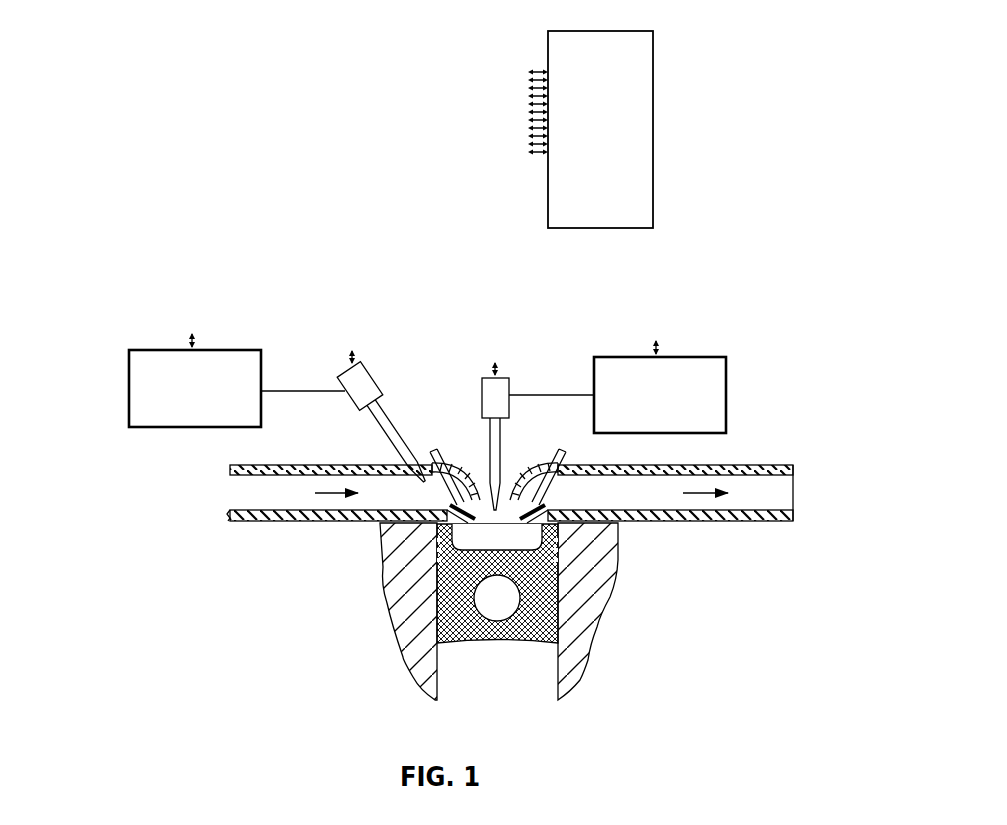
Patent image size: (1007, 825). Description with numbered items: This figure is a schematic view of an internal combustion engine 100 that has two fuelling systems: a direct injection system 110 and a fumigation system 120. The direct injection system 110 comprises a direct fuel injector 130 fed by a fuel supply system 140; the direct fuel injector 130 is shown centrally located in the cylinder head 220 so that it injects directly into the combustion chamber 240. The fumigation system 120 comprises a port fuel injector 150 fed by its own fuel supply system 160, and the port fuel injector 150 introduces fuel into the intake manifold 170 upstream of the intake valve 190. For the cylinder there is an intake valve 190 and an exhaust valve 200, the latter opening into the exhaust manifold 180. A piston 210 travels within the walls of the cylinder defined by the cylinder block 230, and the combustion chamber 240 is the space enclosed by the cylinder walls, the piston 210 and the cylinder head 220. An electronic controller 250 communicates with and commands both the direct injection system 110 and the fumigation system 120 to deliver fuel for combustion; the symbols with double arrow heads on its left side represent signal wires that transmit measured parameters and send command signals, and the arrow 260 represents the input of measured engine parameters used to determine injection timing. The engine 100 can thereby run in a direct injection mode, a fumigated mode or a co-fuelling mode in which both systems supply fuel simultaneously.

The internal combustion engine 100 is at (232, 158).
The direct injection system 110 is at (745, 298).
The fumigation system 120 is at (240, 270).
The direct fuel injector 130 is at (482, 391).
The fuel supply system 140 is at (726, 382).
The port fuel injector 150 is at (340, 376).
The fuel supply system 160 is at (129, 374).
The intake manifold 170 is at (250, 493).
The exhaust manifold 180 is at (765, 492).
The intake valve 190 is at (455, 508).
The exhaust valve 200 is at (540, 498).
The piston 210 is at (440, 608).
The cylinder head 220 is at (505, 487).
The cylinder block 230 is at (410, 560).
The combustion chamber 240 is at (516, 547).
The electronic controller 250 is at (619, 129).
The arrow 260 is at (653, 135).